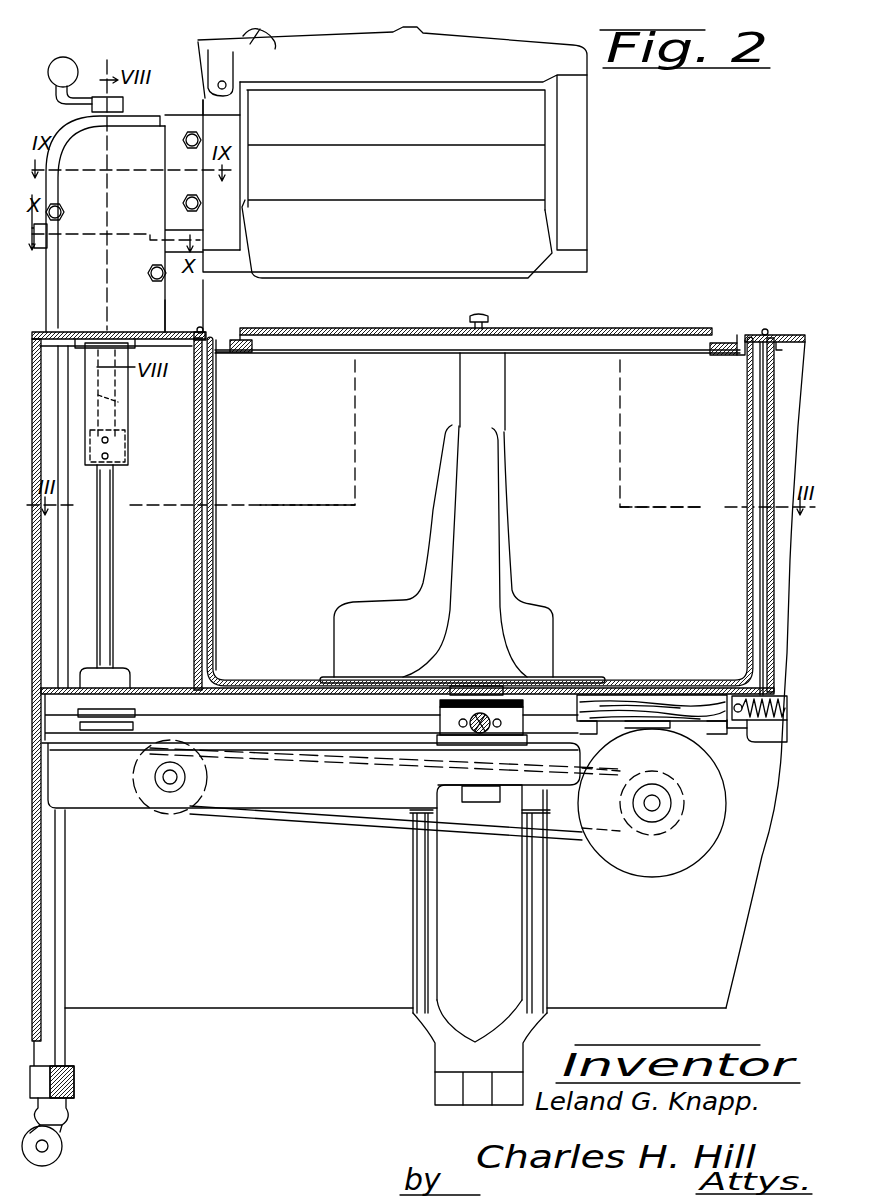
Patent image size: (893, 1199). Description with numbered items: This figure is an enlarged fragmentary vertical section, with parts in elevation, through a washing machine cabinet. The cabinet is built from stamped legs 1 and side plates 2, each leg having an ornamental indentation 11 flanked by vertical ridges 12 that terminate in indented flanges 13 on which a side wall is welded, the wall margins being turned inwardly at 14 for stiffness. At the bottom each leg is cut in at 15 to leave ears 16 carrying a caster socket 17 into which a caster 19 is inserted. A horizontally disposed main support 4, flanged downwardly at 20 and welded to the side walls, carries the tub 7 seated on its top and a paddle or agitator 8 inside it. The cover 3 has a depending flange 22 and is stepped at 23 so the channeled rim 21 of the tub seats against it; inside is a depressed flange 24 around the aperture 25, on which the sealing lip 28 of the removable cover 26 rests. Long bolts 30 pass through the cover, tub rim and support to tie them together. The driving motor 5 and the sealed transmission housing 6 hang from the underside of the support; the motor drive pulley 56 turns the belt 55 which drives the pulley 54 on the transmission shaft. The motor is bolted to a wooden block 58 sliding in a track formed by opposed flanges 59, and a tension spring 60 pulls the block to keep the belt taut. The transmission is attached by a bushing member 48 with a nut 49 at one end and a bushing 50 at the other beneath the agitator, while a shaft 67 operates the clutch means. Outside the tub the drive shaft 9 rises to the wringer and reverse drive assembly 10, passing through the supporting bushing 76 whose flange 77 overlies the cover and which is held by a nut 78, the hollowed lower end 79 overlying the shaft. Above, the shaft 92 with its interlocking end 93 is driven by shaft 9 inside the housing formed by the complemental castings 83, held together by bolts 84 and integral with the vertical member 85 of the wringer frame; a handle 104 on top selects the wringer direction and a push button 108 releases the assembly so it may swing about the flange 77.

The legs 1 is at (56, 902).
The side plates 2 is at (266, 988).
The cover 3 is at (796, 336).
The main support 4 is at (233, 689).
The driving motor 5 is at (690, 842).
The transmission housing 6 is at (292, 800).
The tub 7 is at (218, 571).
The agitator 8 is at (521, 623).
The drive shaft 9 is at (108, 584).
The wringer and reverse drive assembly 10 is at (246, 38).
The indentation 11 is at (45, 935).
The vertical ridge 12 is at (530, 962).
The flange 13 is at (530, 986).
The inturned marginal portion 14 is at (152, 1008).
The cut-in 15 is at (432, 1044).
The ears 16 is at (52, 1068).
The caster socket 17 is at (66, 1086).
The caster 19 is at (62, 1122).
The downward flange 20 is at (272, 707).
The channeled rim 21 is at (228, 346).
The depending flange 22 is at (40, 356).
The inward step 23 is at (225, 333).
The depressed lateral flange 24 is at (240, 353).
The aperture 25 is at (322, 354).
The removable cover 26 is at (505, 331).
The sealing lip 28 is at (718, 343).
The long bolts 30 is at (200, 484).
The bushing member 48 is at (118, 708).
The nut 49 is at (122, 670).
The bushing 50 is at (458, 718).
The pulley 54 is at (190, 800).
The belt 55 is at (475, 826).
The drive pulley 56 is at (684, 792).
The wooden block 58 is at (672, 700).
The opposed flanges 59 is at (775, 742).
The tension spring 60 is at (780, 702).
The shaft 67 is at (490, 720).
The supporting bushing 76 is at (113, 413).
The flange 77 is at (166, 332).
The nut 78 is at (150, 334).
The hollowed lower end 79 is at (98, 466).
The complemental castings 83 is at (124, 196).
The bolts 84 is at (200, 203).
The vertical member 85 is at (225, 123).
The shaft 92 is at (112, 404).
The end 93 is at (122, 446).
The handle 104 is at (67, 68).
The push button 108 is at (40, 238).